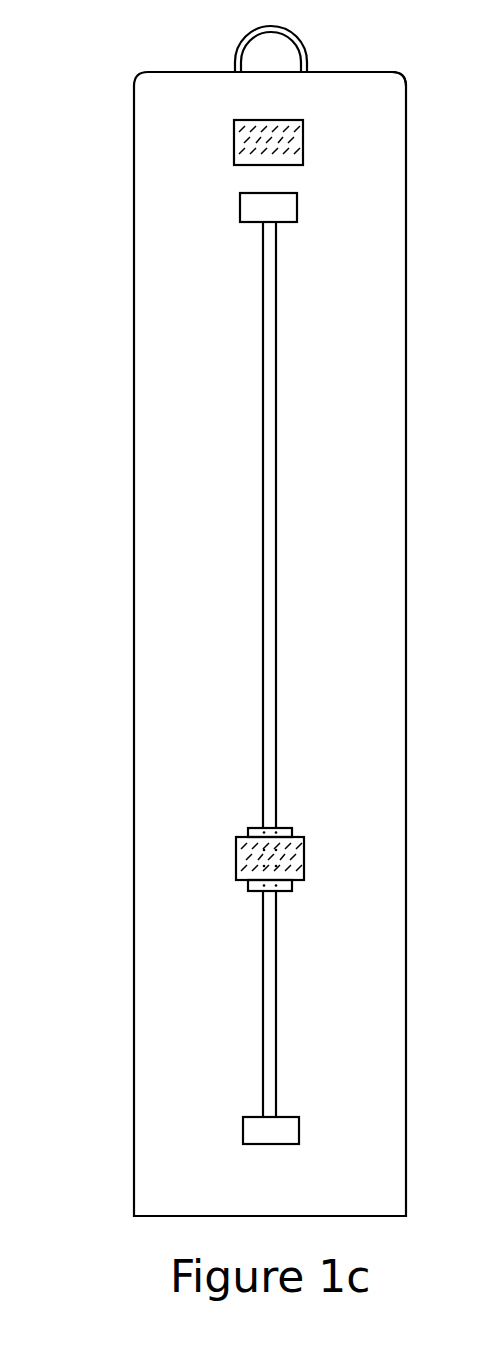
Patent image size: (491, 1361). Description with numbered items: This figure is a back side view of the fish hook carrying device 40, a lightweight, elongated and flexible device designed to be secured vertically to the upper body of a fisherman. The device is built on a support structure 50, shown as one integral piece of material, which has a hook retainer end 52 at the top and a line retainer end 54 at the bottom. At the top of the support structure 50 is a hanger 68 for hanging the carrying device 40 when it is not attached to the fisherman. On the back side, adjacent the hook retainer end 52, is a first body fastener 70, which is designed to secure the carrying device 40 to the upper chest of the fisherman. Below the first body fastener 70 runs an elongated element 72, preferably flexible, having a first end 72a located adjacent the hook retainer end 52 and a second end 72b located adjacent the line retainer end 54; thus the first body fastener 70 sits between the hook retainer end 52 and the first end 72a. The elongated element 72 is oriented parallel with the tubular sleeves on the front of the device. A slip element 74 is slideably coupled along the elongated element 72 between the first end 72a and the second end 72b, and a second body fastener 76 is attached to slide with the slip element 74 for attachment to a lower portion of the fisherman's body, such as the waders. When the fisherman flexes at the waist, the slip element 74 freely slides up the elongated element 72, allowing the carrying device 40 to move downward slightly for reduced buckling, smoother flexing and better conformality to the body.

The carrying device 40 is at (407, 59).
The support structure 50 is at (176, 444).
The hook retainer end 52 is at (165, 72).
The line retainer end 54 is at (183, 1217).
The hanger 68 is at (245, 38).
The first body fastener 70 is at (250, 131).
The elongated element 72 is at (268, 295).
The first end 72a is at (263, 232).
The second end 72b is at (263, 1112).
The slip element 74 is at (258, 830).
The second body fastener 76 is at (248, 856).